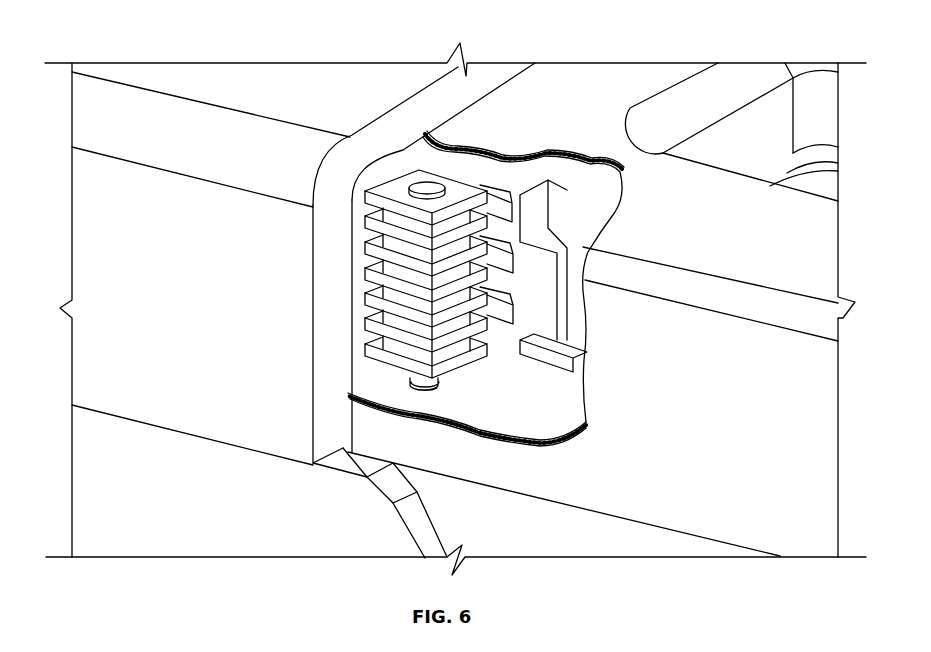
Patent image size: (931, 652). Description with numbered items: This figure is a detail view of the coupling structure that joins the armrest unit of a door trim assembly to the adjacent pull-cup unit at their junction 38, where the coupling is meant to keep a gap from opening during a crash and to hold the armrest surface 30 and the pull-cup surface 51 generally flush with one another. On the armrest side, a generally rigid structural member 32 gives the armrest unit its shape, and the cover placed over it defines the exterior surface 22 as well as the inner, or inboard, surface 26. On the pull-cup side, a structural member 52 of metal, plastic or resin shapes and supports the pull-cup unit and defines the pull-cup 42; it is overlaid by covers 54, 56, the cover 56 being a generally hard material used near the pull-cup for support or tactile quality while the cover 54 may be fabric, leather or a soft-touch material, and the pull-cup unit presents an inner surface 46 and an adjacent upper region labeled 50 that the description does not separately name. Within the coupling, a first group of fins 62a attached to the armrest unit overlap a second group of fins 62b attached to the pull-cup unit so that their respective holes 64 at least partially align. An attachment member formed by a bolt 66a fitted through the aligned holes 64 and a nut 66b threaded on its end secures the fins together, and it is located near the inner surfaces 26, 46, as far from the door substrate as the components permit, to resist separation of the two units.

The surface 22 is at (292, 92).
The inner surface 26 is at (140, 255).
The surface 30 is at (383, 393).
The structural member 32 is at (423, 160).
The junction 38 is at (505, 82).
The pull-cup 42 is at (814, 122).
The inner surface 46 is at (780, 442).
The upper surface 50 is at (605, 97).
The surface 51 is at (465, 152).
The structural member 52 is at (533, 207).
The cover 54 is at (783, 512).
The cover 56 is at (783, 265).
The first group of fins 62a is at (380, 225).
The second group of fins 62b is at (530, 262).
The hole 64 is at (417, 220).
The bolt 66a is at (430, 182).
The nut 66b is at (440, 390).